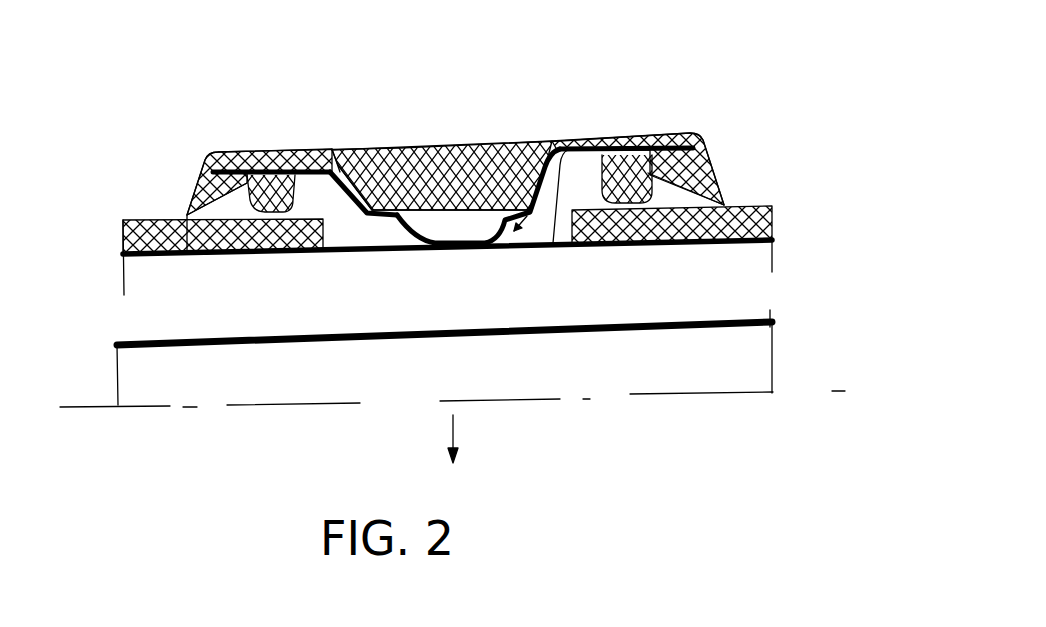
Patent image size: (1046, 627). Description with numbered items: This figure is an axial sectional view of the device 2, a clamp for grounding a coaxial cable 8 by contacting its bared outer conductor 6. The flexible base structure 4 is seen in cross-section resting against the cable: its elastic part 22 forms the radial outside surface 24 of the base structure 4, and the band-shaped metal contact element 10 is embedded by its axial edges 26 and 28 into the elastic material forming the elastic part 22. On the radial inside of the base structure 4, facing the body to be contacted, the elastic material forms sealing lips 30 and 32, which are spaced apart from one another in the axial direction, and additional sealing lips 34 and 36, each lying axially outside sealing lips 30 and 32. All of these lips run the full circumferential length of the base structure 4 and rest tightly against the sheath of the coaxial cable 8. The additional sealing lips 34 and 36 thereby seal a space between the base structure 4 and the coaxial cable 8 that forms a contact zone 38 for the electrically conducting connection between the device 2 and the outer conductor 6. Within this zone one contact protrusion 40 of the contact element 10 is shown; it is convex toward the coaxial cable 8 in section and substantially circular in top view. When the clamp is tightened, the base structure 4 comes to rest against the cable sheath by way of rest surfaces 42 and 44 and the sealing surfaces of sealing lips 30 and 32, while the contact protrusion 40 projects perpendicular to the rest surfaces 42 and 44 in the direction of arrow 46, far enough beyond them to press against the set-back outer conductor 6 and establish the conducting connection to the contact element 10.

The device 2 is at (742, 103).
The flexible base structure 4 is at (192, 164).
The outer conductor 6 is at (568, 143).
The coaxial cable 8 is at (773, 265).
The contact element 10 is at (330, 155).
The elastic part 22 is at (482, 153).
The radial outside surface 24 is at (442, 150).
The axial edge 26 is at (227, 155).
The axial edge 28 is at (677, 137).
The sealing lip 30 is at (282, 155).
The sealing lip 32 is at (618, 140).
The additional sealing lip 34 is at (190, 193).
The additional sealing lip 36 is at (718, 178).
The contact zone 38 is at (523, 143).
The contact protrusion 40 is at (418, 230).
The rest surface 42 is at (283, 213).
The rest surface 44 is at (670, 211).
The arrow 46 is at (458, 432).